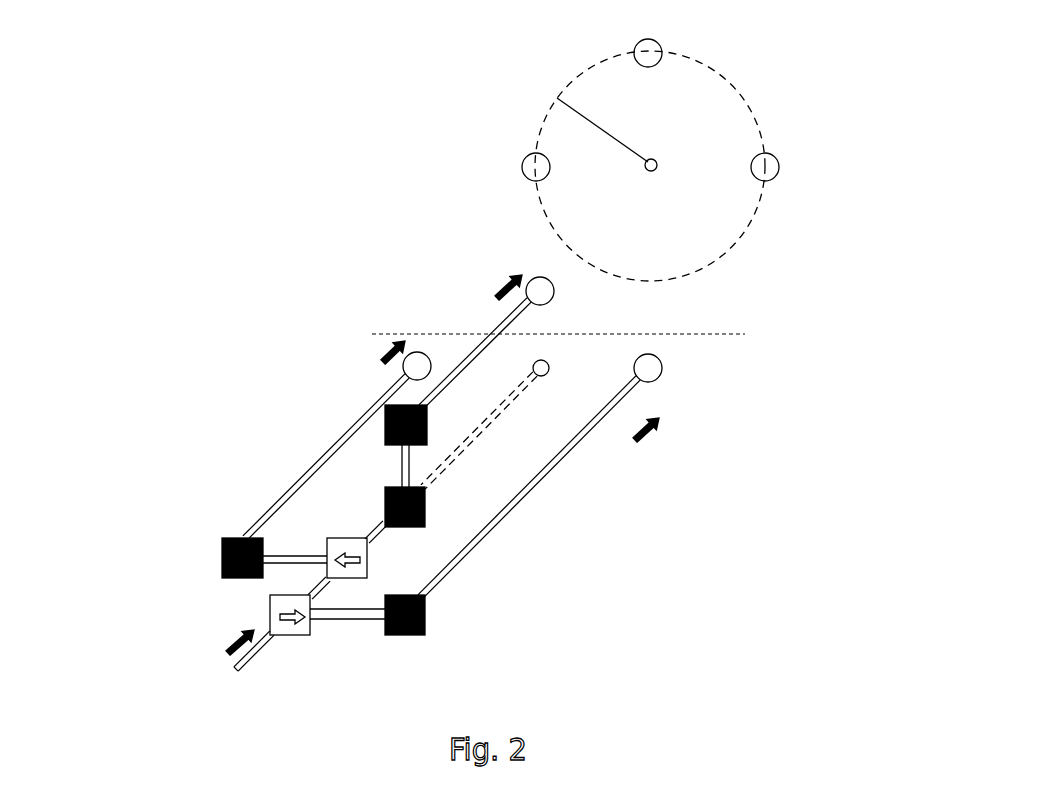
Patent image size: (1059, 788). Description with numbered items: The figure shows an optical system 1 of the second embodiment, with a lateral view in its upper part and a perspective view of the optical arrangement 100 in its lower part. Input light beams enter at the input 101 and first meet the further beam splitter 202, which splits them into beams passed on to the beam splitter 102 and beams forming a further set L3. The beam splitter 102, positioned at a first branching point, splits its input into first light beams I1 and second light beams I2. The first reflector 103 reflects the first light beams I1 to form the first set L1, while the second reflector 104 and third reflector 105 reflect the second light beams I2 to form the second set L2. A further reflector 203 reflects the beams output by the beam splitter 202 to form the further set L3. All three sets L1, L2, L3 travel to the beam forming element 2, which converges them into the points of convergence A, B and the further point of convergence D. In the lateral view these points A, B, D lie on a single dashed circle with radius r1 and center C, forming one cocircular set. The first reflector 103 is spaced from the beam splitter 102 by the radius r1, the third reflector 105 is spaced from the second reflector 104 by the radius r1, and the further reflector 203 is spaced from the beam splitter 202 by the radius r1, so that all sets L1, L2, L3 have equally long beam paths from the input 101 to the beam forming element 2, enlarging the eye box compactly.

The optical system 1 is at (88, 269).
The beam forming element 2 is at (683, 332).
The optical arrangement 100 is at (236, 350).
The input 101 is at (236, 668).
The beam splitter 102 is at (328, 543).
The first reflector 103 is at (222, 558).
The second reflector 104 is at (427, 525).
The third reflector 105 is at (385, 420).
The further beam splitter 202 is at (292, 636).
The further reflector 203 is at (402, 637).
The first set of light beams L1 is at (292, 483).
The second set of light beams L2 is at (478, 347).
The further set of light beams L3 is at (517, 500).
The first light beams I1 is at (293, 564).
The second light beams I2 is at (373, 536).
The point of convergence A is at (537, 163).
The point of convergence B is at (653, 50).
The center C is at (657, 172).
The further point of convergence D is at (768, 165).
The radius r1 is at (602, 130).